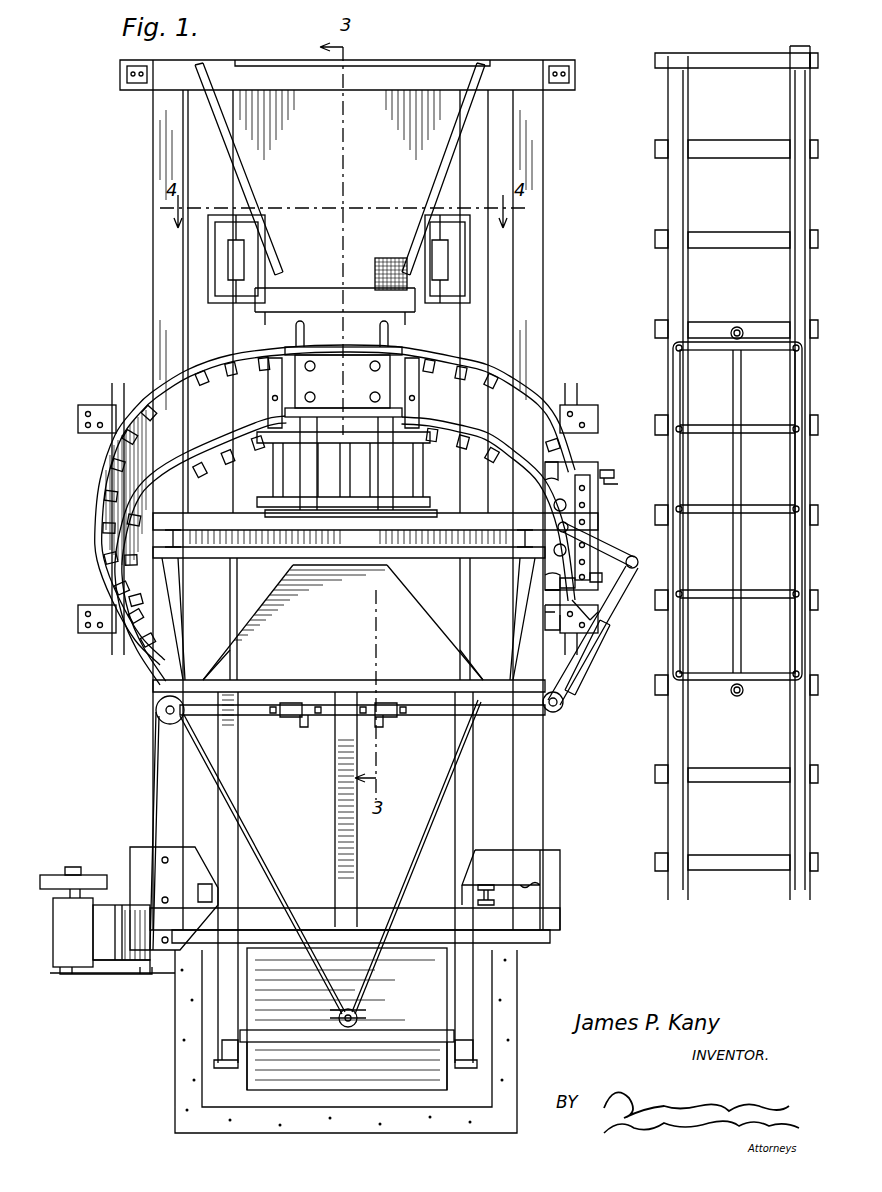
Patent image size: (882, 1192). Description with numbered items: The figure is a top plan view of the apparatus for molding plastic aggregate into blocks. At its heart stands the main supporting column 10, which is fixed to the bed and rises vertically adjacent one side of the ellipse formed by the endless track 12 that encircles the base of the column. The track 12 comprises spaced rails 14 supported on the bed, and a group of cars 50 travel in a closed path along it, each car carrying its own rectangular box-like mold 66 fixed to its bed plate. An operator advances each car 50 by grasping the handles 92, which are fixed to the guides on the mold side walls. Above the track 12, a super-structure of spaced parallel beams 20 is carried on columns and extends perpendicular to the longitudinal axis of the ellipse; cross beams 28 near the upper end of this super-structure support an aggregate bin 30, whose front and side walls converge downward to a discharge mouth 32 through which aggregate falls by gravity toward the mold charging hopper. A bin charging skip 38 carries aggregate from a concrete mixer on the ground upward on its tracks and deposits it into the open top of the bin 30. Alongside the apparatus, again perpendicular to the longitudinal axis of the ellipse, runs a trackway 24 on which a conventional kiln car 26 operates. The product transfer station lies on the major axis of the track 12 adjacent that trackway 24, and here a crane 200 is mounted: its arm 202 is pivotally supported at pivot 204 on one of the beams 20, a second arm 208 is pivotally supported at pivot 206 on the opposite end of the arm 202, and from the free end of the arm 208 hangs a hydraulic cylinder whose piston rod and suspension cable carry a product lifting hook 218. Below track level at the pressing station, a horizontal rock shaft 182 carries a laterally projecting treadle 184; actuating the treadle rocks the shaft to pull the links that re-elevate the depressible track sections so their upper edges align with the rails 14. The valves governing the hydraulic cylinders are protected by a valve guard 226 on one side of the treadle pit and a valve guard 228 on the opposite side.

The main supporting column 10 is at (343, 492).
The endless track 12 is at (125, 513).
The rails 14 is at (237, 432).
The spaced parallel beams 20 is at (160, 304).
The trackway 24 is at (665, 296).
The kiln car 26 is at (751, 402).
The cross beams 28 is at (228, 852).
The aggregate bin 30 is at (417, 698).
The discharge mouth 32 is at (338, 565).
The bin charging skip 38 is at (267, 1052).
The car 50 is at (603, 458).
The mold 66 is at (358, 340).
The handles 92 is at (305, 340).
The rock shaft 182 is at (290, 311).
The treadle 184 is at (388, 250).
The crane 200 is at (594, 664).
The arm 202 is at (613, 610).
The pivot 204 is at (560, 712).
The pivot 206 is at (640, 572).
The arm 208 is at (604, 550).
The product lifting hook 218 is at (590, 522).
The valve guard 226 is at (210, 272).
The valve guard 228 is at (468, 230).